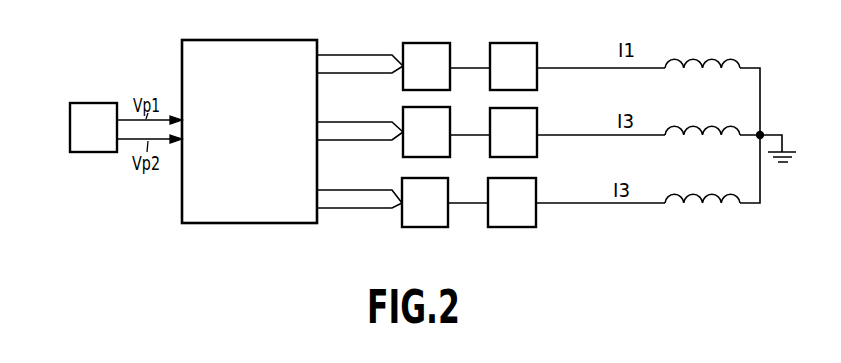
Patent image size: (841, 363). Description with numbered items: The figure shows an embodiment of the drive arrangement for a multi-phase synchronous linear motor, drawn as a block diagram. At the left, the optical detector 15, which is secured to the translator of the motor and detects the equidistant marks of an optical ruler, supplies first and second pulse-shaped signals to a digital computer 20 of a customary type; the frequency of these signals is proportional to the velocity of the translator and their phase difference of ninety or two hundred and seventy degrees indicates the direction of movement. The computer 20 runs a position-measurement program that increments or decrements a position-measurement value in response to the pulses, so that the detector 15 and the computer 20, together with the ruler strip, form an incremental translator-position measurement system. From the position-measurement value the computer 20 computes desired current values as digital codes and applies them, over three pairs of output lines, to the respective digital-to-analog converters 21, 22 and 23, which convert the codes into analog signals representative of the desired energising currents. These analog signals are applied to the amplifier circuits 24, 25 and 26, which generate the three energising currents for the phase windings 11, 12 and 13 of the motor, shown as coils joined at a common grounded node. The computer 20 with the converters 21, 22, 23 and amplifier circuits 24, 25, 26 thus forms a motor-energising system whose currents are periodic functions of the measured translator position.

The phase winding 11 is at (703, 60).
The phase winding 12 is at (711, 125).
The phase winding 13 is at (709, 197).
The optical detector 15 is at (93, 155).
The digital computer 20 is at (212, 225).
The digital-to-analog converter 21 is at (438, 42).
The digital-to-analog converter 22 is at (450, 121).
The digital-to-analog converter 23 is at (448, 217).
The amplifier circuit 24 is at (535, 46).
The amplifier circuit 25 is at (537, 122).
The amplifier circuit 26 is at (537, 217).